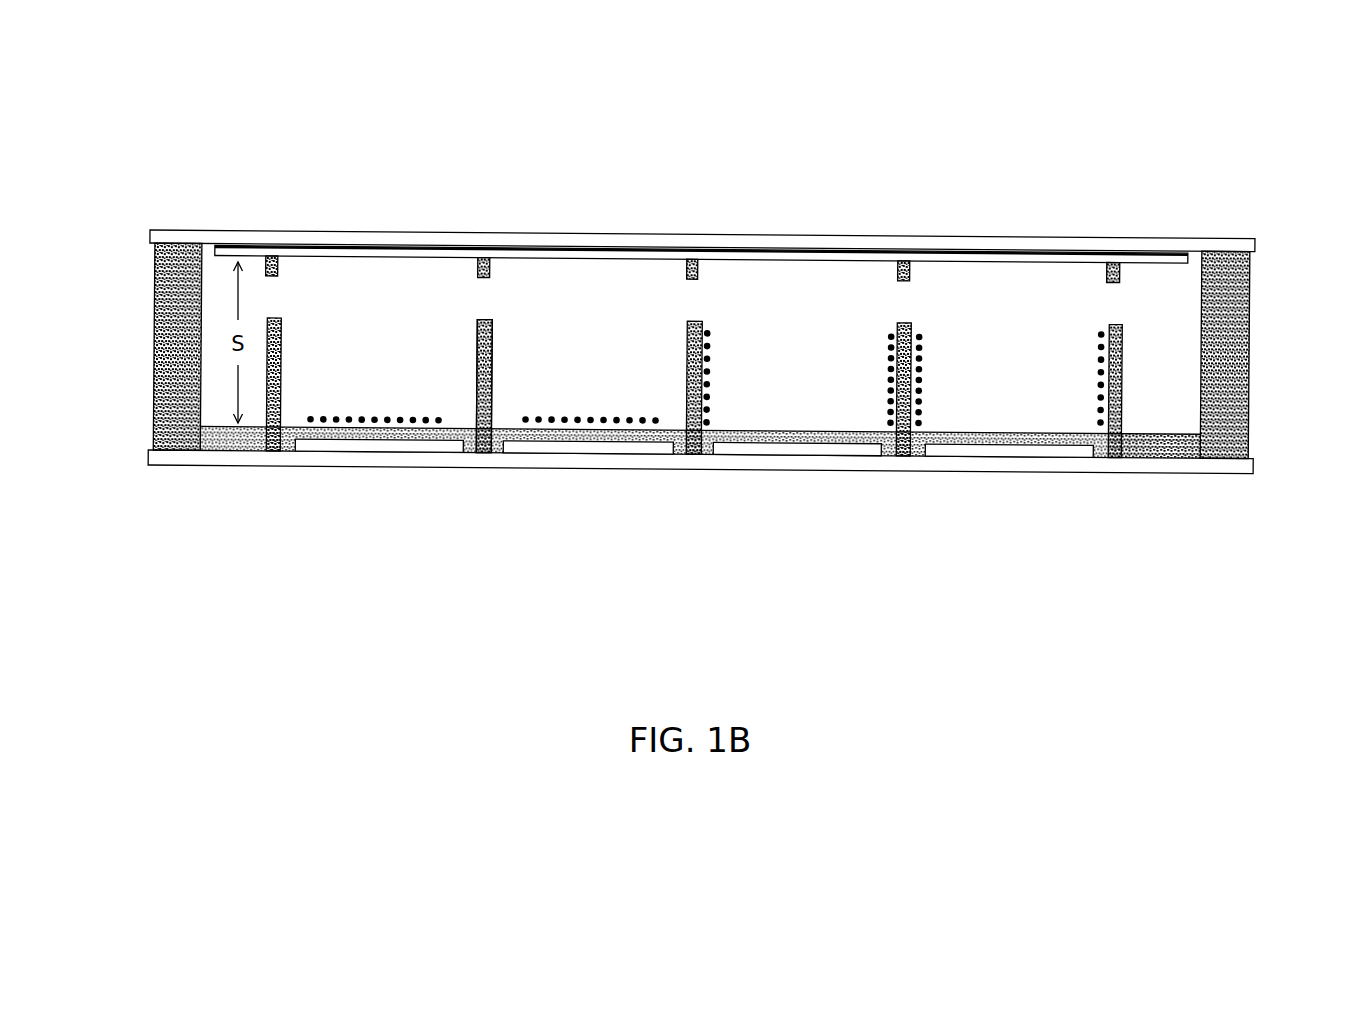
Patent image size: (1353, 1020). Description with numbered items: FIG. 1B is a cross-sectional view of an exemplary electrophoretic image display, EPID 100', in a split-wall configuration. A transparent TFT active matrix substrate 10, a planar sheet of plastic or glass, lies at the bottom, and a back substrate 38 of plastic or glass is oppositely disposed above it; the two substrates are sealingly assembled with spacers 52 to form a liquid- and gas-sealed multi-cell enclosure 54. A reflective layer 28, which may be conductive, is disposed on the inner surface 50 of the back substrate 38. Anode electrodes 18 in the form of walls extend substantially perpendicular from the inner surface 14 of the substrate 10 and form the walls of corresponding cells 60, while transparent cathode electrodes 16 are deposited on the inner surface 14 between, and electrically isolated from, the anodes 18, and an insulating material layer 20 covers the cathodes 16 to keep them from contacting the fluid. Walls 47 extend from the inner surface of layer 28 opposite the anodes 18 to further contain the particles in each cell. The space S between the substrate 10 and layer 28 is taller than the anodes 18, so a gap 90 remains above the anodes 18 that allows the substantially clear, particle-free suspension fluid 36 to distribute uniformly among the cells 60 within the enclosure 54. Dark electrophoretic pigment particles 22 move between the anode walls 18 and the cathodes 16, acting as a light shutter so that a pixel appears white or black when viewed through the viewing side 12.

The EPID 100' is at (685, 85).
The TFT active matrix substrate 10 is at (175, 458).
The viewing side 12 is at (697, 505).
The inner surface 14 is at (1178, 457).
The cathode electrodes 16 is at (317, 452).
The anode electrodes 18 is at (478, 380).
The insulating material layer 20 is at (1148, 445).
The electrophoretic pigment particles 22 is at (595, 412).
The layer 28 is at (403, 249).
The electrophoretic suspension fluid 36 is at (615, 293).
The back substrate 38 is at (252, 225).
The walls 47 is at (492, 272).
The inner surface 50 is at (335, 256).
The spacers 52 is at (157, 297).
The multi-cell enclosure 54 is at (743, 288).
The cells 60 is at (972, 402).
The gap 90 is at (485, 306).